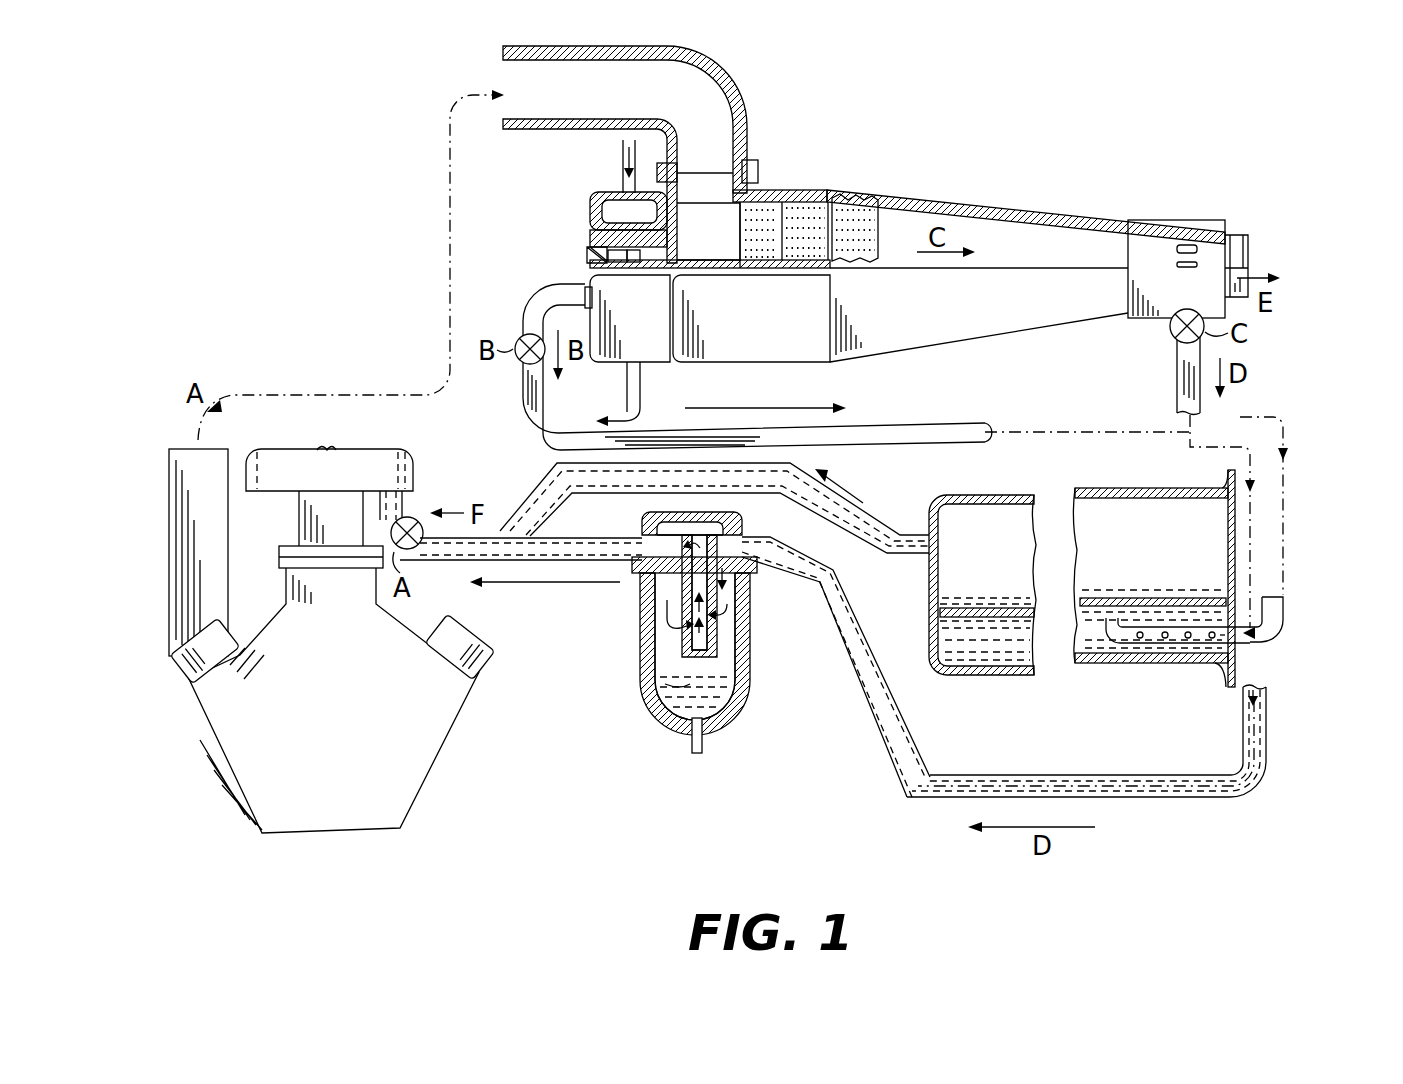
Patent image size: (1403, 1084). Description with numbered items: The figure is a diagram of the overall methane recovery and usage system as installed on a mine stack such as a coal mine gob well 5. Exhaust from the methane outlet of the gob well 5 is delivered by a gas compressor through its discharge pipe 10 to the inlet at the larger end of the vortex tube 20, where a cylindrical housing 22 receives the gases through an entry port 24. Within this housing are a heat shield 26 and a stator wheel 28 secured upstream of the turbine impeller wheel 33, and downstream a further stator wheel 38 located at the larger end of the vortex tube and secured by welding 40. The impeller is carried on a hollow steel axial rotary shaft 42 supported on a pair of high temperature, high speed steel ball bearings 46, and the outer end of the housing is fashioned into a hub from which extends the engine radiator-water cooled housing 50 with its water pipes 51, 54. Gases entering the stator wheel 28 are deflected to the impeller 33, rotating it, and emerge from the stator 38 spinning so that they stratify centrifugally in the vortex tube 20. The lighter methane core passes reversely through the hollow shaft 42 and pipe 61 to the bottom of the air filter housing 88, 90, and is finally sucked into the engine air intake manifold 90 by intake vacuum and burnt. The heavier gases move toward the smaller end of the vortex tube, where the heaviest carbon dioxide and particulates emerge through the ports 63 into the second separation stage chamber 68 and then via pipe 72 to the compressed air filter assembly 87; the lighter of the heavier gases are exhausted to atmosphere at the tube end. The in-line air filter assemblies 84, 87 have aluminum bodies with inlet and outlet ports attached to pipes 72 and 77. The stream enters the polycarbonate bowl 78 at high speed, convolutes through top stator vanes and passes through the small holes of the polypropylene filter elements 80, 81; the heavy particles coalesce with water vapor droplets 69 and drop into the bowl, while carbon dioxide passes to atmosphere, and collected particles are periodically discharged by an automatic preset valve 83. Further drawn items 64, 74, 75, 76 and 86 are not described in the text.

The gob well 5 is at (332, 662).
The discharge pipe 10 is at (198, 552).
The vortex tube 20 is at (990, 196).
The cylindrical housing 22 is at (776, 188).
The entry port 24 is at (680, 183).
The heat shield 26 is at (680, 255).
The stator wheel 28 is at (808, 196).
The turbine impeller wheel 33 is at (797, 276).
The further stator wheel 38 is at (880, 200).
The welding 40 is at (846, 196).
The hollow steel axial rotary shaft 42 is at (716, 270).
The steel ball bearings 46 is at (590, 254).
The engine radiator-water cooled housing 50 is at (588, 207).
The water pipe 51 is at (621, 143).
The water pipe 54 is at (605, 399).
The pipe 61 is at (1005, 424).
The ports 63 is at (1192, 243).
The collection tank 64 is at (1170, 489).
The second separation stage chamber 68 is at (1156, 218).
The water vapor droplets 69 is at (650, 681).
The pipe 72 is at (1180, 386).
The filter plate 74 is at (1010, 602).
The tank 75 is at (988, 600).
The return pipe 76 is at (897, 546).
The pipe 77 is at (616, 546).
The polycarbonate bowl 78 is at (666, 716).
The polypropylene filter element 80 is at (690, 640).
The polypropylene filter element 81 is at (697, 592).
The automatic preset valve 83 is at (712, 750).
The in-line air filter assembly 84 is at (680, 512).
The separator housing 86 is at (740, 727).
The compressed air filter assembly 87 is at (692, 562).
The air filter housing 88 is at (416, 473).
The air intake manifold 90 is at (394, 449).